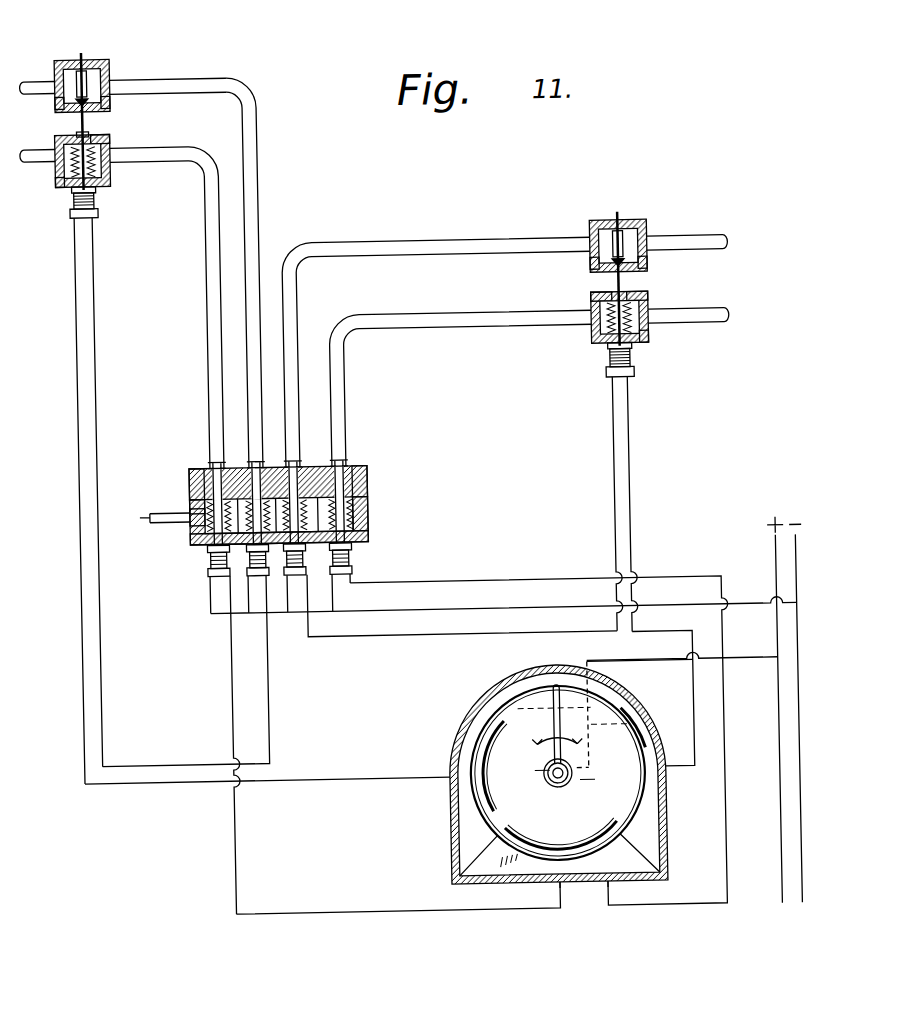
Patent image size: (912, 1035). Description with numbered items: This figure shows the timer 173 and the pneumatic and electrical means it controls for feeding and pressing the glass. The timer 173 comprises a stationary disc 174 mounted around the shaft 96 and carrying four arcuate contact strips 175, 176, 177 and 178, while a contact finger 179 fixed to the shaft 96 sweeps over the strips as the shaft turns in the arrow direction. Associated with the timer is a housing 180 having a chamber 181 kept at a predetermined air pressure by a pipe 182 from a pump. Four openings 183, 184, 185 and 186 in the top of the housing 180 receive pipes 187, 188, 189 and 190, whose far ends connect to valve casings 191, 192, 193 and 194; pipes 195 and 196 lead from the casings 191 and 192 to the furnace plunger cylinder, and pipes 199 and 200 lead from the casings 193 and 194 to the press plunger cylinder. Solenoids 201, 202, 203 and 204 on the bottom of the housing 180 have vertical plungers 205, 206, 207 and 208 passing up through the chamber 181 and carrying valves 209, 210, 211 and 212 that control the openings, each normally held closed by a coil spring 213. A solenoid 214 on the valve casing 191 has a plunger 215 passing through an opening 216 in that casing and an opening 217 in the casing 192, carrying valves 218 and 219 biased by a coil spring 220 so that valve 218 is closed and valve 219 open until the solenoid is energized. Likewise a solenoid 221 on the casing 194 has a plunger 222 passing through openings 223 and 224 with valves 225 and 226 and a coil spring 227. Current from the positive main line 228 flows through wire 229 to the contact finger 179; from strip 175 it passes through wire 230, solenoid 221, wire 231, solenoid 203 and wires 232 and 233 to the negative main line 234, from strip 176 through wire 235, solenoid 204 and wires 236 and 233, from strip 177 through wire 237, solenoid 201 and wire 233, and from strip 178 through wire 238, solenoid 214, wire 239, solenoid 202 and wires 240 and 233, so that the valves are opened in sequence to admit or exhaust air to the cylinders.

The shaft 96 is at (563, 788).
The timer 173 is at (622, 676).
The stationary disc 174 is at (661, 787).
The contact strip 175 is at (645, 730).
The contact strip 176 is at (566, 886).
The contact strip 177 is at (536, 848).
The contact strip 178 is at (480, 803).
The contact finger 179 is at (548, 712).
The housing 180 is at (369, 466).
The chamber 181 is at (190, 538).
The pipe 182 is at (148, 506).
The opening 183 is at (190, 472).
The opening 184 is at (264, 463).
The opening 185 is at (302, 463).
The opening 186 is at (350, 464).
The pipe 187 is at (211, 256).
The pipe 188 is at (265, 225).
The pipe 189 is at (414, 240).
The pipe 190 is at (497, 328).
The valve casing 191 is at (62, 172).
The valve casing 192 is at (96, 52).
The valve casing 193 is at (637, 230).
The valve casing 194 is at (595, 345).
The pipe 195 is at (38, 141).
The pipe 196 is at (38, 72).
The pipe 199 is at (730, 240).
The pipe 200 is at (725, 327).
The solenoid 201 is at (207, 570).
The solenoid 202 is at (266, 575).
The solenoid 203 is at (307, 574).
The solenoid 204 is at (352, 572).
The vertical plunger 205 is at (228, 517).
The vertical plunger 206 is at (266, 516).
The vertical plunger 207 is at (308, 515).
The vertical plunger 208 is at (368, 514).
The valve 209 is at (190, 500).
The valve 210 is at (226, 463).
The valve 211 is at (325, 514).
The valve 212 is at (368, 488).
The coil spring 213 is at (192, 518).
The solenoid 214 is at (104, 196).
The plunger 215 is at (97, 126).
The opening 216 is at (117, 132).
The opening 217 is at (118, 97).
The valve 218 is at (88, 116).
The valve 219 is at (63, 96).
The coil spring 220 is at (66, 181).
The solenoid 221 is at (639, 363).
The plunger 222 is at (621, 283).
The opening 223 is at (652, 299).
The opening 224 is at (648, 273).
The valve 225 is at (595, 300).
The valve 226 is at (595, 266).
The coil spring 227 is at (652, 341).
The positive main line 228 is at (775, 768).
The wire 229 is at (735, 666).
The wire 230 is at (645, 630).
The wire 231 is at (615, 465).
The wire 232 is at (270, 612).
The wire 233 is at (474, 608).
The negative main line 234 is at (796, 684).
The wire 235 is at (705, 915).
The wire 236 is at (343, 602).
The wire 237 is at (275, 926).
The wire 238 is at (166, 778).
The wire 239 is at (100, 365).
The wire 240 is at (232, 615).